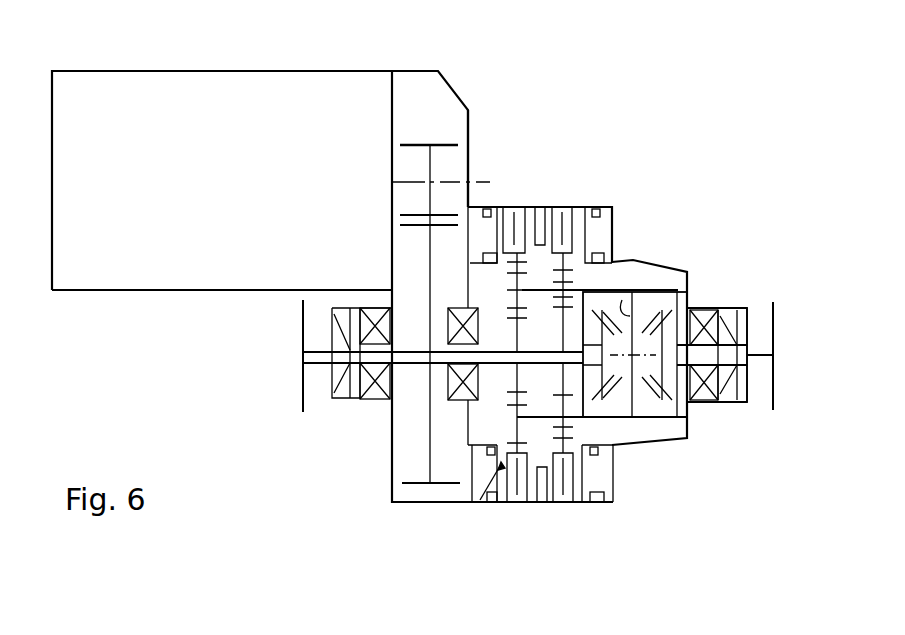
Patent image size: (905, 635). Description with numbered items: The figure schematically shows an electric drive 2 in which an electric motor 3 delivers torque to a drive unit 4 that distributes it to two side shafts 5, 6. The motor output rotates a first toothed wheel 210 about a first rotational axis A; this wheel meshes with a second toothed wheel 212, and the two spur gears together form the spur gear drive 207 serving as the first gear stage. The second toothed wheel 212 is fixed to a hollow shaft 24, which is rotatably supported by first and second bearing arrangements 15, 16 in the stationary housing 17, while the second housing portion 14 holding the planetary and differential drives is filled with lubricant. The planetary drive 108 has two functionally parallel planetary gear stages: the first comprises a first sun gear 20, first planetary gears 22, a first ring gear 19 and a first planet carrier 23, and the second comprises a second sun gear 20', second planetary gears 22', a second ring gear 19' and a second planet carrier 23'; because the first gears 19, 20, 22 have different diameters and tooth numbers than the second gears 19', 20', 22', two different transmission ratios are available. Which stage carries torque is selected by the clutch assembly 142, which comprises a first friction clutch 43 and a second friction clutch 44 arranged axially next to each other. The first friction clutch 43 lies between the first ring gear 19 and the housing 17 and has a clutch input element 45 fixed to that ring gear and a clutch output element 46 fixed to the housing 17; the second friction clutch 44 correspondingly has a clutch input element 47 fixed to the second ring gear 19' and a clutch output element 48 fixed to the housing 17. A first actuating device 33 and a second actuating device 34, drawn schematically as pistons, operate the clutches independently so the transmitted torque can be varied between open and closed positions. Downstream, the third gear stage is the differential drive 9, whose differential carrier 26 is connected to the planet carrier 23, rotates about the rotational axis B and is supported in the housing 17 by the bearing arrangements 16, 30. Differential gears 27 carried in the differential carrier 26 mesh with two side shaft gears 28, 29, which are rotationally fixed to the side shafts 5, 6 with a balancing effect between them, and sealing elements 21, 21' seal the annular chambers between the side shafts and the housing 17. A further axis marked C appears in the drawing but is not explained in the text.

The electric drive 2 is at (640, 94).
The electric motor 3 is at (216, 186).
The drive unit 4 is at (538, 129).
The side shaft 5 is at (770, 372).
The side shaft 6 is at (318, 400).
The differential drive 9 is at (657, 433).
The second housing portion 14 is at (688, 277).
The first bearing arrangement 15 is at (372, 305).
The second bearing arrangement 16 is at (462, 402).
The stationary housing 17 is at (604, 206).
The first ring gear 19 is at (483, 295).
The second ring gear 19' is at (610, 507).
The first sun gear 20 is at (528, 408).
The second sun gear 20' is at (602, 453).
The sealing element 21 is at (751, 333).
The sealing element 21' is at (359, 330).
The first planetary gears 22 is at (482, 293).
The second planetary gears 22' is at (596, 449).
The first planet carrier 23 is at (554, 302).
The second planet carrier 23' is at (600, 263).
The hollow shaft 24 is at (395, 368).
The differential carrier 26 is at (688, 438).
The differential gears 27 is at (641, 310).
The side shaft gear 28 is at (690, 308).
The side shaft gear 29 is at (632, 377).
The bearing arrangement 30 is at (708, 403).
The first actuating device 33 is at (486, 205).
The second actuating device 34 is at (612, 232).
The first friction clutch 43 is at (517, 205).
The second friction clutch 44 is at (579, 205).
The clutch input element 45 is at (504, 500).
The clutch output element 46 is at (513, 503).
The clutch input element 47 is at (546, 503).
The clutch output element 48 is at (561, 503).
The planetary drive 108 is at (482, 502).
The clutch assembly 142 is at (552, 199).
The spur gear drive 207 is at (440, 101).
The first toothed wheel 210 is at (443, 138).
The second toothed wheel 212 is at (430, 248).
The first rotational axis A is at (452, 177).
The rotational axis B is at (652, 310).
The axis C is at (624, 300).